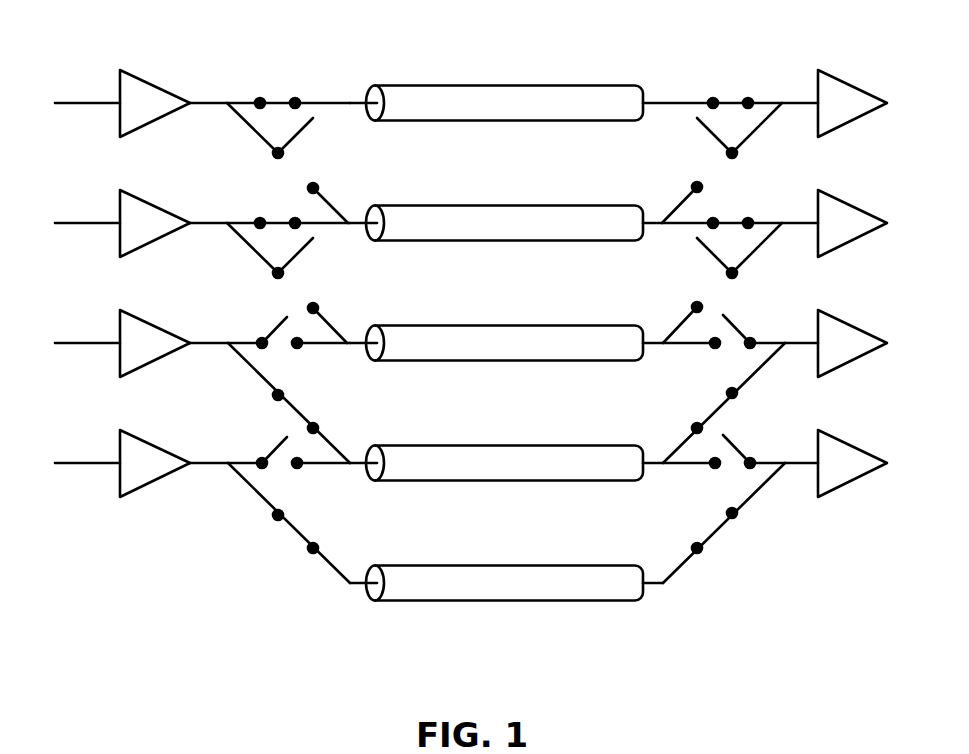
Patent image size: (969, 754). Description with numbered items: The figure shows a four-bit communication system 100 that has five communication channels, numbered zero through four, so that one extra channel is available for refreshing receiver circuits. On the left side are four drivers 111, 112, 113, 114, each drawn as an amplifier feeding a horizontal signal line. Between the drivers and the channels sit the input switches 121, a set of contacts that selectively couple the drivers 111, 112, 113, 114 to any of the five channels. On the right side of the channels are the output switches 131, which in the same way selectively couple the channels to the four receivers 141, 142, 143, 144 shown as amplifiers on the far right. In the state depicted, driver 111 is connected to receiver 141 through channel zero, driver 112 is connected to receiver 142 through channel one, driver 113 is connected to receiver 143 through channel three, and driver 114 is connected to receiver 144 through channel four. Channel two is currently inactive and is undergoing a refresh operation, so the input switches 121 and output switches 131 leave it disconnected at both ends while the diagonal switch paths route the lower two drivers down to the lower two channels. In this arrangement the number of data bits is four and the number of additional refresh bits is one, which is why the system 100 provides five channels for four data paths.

The communication system 100 is at (616, 26).
The driver 111 is at (122, 103).
The driver 112 is at (122, 223).
The driver 113 is at (122, 343).
The driver 114 is at (122, 463).
The input switches 121 is at (227, 617).
The output switches 131 is at (787, 616).
The receiver 141 is at (852, 103).
The receiver 142 is at (852, 223).
The receiver 143 is at (852, 343).
The receiver 144 is at (852, 463).